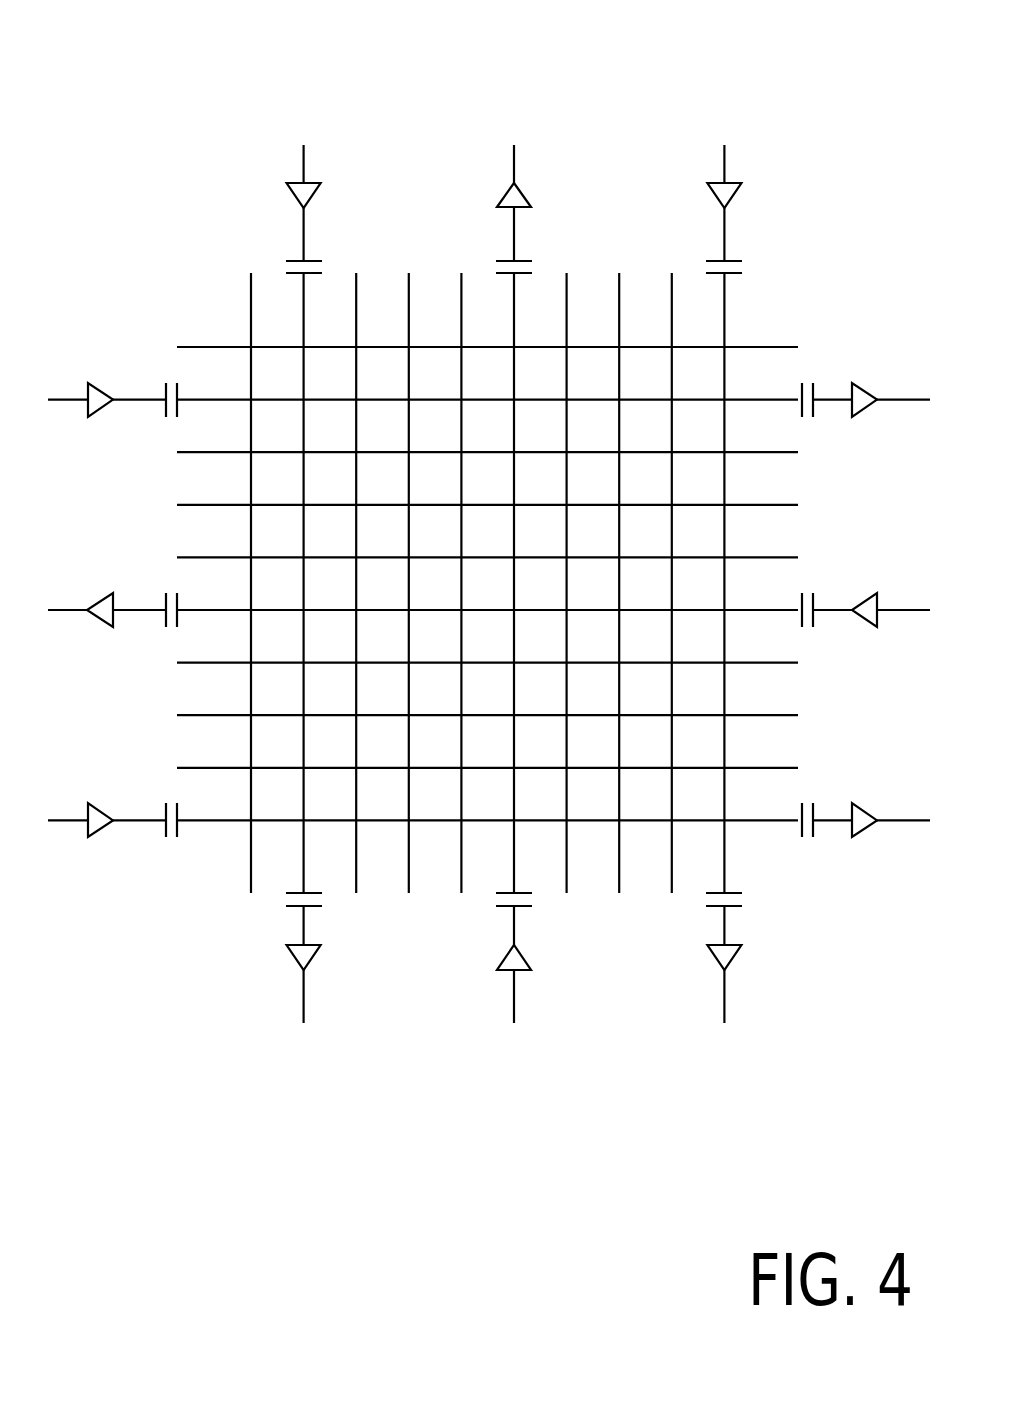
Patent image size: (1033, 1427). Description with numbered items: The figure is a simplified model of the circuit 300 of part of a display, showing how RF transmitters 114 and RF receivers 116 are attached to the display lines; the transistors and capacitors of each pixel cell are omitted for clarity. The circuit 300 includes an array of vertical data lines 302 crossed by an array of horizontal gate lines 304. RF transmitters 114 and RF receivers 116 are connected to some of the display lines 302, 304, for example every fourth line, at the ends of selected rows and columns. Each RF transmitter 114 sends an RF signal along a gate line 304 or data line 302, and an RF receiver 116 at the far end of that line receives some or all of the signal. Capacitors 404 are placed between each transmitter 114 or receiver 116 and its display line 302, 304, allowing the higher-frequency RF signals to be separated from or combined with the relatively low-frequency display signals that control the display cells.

The circuit 300 is at (91, 101).
The data line 302 is at (251, 273).
The gate line 304 is at (231, 346).
The capacitor 404 is at (320, 259).
The RF transmitter 114 is at (319, 187).
The RF receiver 116 is at (522, 193).